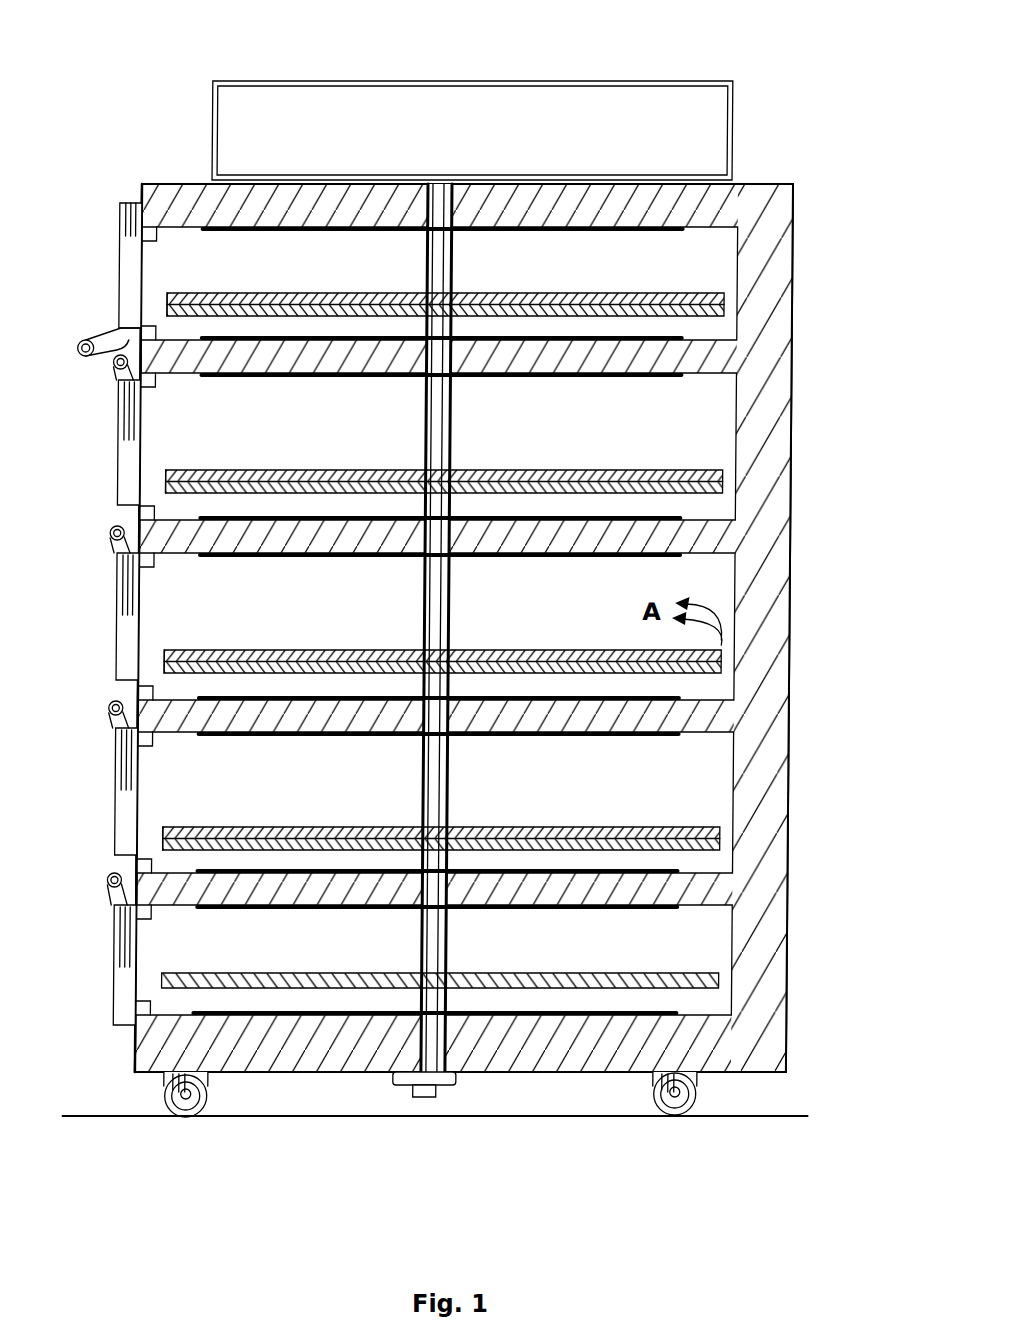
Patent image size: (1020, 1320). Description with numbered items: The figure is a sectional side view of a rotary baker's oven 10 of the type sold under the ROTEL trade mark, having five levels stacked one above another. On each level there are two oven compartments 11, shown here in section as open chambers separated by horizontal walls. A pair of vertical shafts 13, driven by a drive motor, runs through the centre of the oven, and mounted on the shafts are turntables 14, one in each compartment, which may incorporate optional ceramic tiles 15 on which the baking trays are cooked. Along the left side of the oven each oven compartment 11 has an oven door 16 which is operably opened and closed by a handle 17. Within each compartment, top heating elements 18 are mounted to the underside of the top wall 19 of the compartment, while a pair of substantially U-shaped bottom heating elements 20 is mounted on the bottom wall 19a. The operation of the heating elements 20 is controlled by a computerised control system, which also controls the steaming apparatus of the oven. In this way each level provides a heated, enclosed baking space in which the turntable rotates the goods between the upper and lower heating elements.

The rotary oven 10 is at (148, 103).
The oven compartment 11 is at (537, 280).
The vertical shaft 13 is at (432, 1033).
The turntable 14 is at (270, 485).
The ceramic tile 15 is at (200, 470).
The oven door 16 is at (127, 250).
The handle 17 is at (107, 327).
The top heating element 18 is at (245, 233).
The top wall 19 is at (172, 224).
The bottom wall 19a is at (722, 340).
The bottom heating element 20 is at (290, 337).